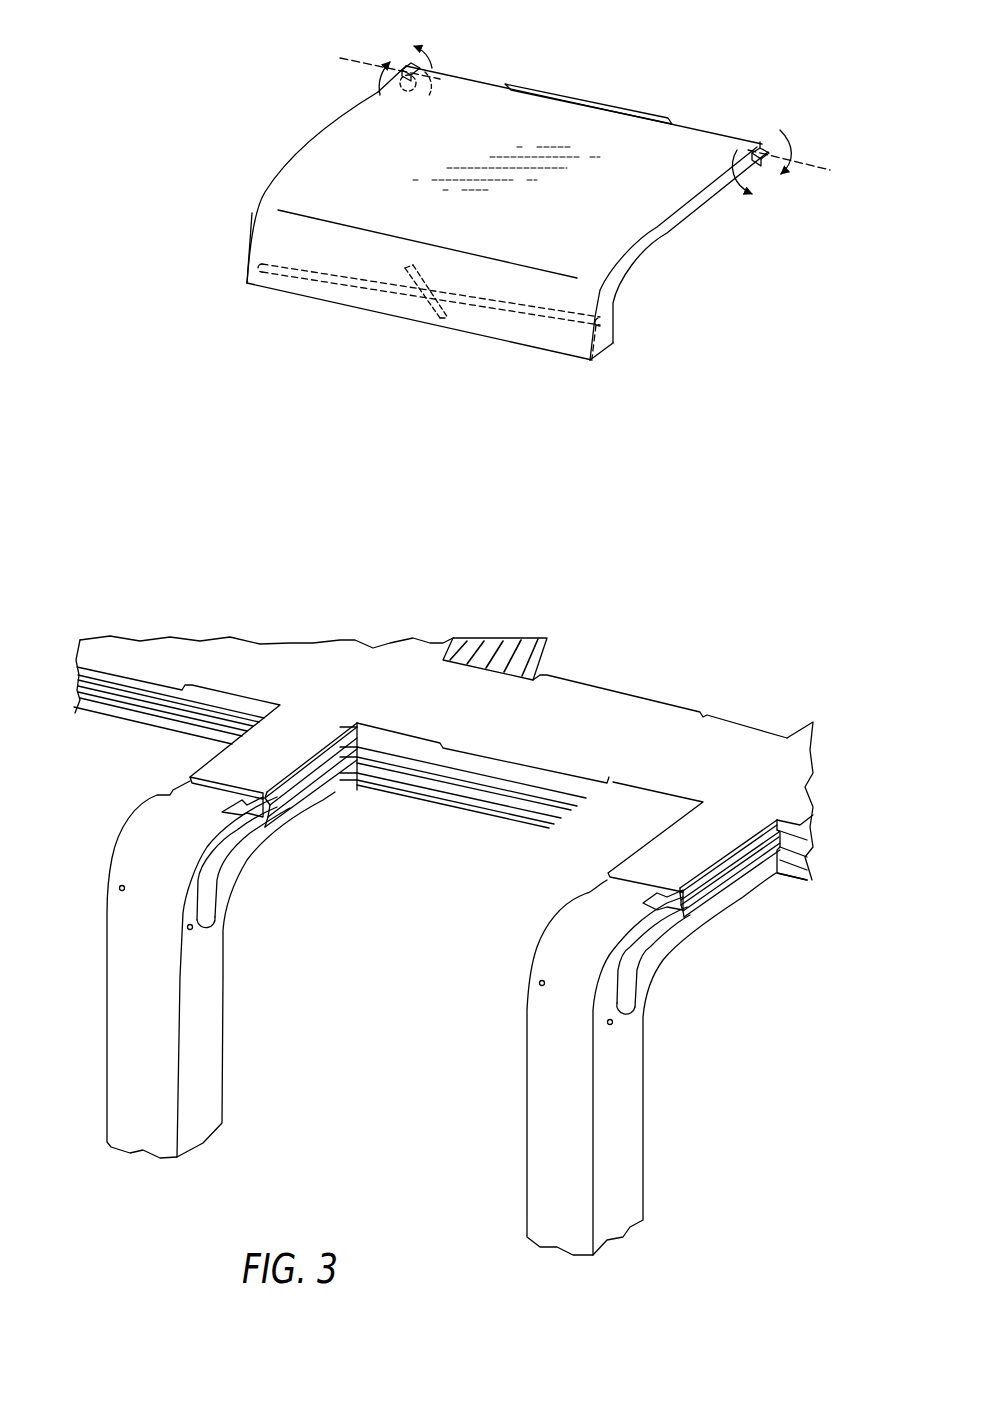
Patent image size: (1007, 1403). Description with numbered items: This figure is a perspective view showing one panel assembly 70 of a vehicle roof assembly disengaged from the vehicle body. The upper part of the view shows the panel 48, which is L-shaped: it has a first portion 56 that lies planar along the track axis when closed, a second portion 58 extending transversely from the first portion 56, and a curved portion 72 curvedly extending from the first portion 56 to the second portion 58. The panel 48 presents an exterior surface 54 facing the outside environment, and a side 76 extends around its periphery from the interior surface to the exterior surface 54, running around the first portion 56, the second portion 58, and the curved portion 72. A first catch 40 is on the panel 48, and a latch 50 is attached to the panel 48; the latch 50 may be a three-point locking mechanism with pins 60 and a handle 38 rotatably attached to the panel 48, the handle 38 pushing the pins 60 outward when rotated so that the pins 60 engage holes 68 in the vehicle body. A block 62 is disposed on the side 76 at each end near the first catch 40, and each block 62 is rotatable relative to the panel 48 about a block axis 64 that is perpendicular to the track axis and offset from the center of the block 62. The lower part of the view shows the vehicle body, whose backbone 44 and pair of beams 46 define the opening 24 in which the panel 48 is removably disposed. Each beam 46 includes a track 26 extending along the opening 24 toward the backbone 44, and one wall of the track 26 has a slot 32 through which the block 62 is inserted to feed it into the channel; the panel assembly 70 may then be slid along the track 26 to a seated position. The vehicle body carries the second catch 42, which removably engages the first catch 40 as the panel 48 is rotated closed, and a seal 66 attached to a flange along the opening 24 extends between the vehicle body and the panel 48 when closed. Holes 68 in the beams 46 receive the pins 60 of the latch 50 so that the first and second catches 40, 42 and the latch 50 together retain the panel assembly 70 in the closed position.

The opening 24 is at (437, 1042).
The track 26 is at (260, 786).
The slot 32 is at (257, 813).
The handle 38 is at (441, 320).
The first catch 40 is at (594, 100).
The second catch 42 is at (147, 680).
The backbone 44 is at (797, 776).
The beams 46 is at (223, 1025).
The panel 48 is at (318, 138).
The latch 50 is at (404, 339).
The exterior surface 54 is at (452, 117).
The first portion 56 is at (613, 207).
The second portion 58 is at (575, 342).
The pins 60 is at (303, 282).
The block 62 is at (406, 66).
The block axis 64 is at (352, 58).
The seal 66 is at (132, 707).
The holes 68 is at (120, 887).
The panel assembly 70 is at (166, 134).
The curved portion 72 is at (303, 217).
The side 76 is at (603, 335).